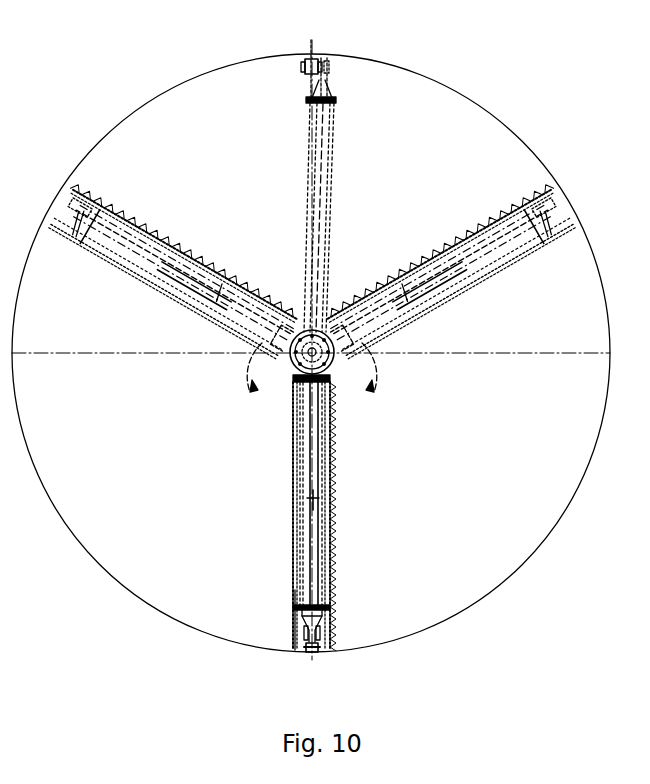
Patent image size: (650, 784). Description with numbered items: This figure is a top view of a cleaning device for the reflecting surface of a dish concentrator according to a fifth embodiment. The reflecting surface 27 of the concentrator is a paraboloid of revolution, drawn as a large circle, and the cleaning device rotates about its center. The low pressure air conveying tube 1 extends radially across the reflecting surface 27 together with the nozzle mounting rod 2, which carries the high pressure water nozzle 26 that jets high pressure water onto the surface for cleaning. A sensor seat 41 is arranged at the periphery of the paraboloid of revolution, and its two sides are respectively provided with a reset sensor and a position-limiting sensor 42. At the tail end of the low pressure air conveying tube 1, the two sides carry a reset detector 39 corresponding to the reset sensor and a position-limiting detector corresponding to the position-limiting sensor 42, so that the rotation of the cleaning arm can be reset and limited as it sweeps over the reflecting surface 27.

The low pressure air conveying tube 1 is at (335, 462).
The nozzle mounting rod 2 is at (335, 510).
The high pressure water nozzle 26 is at (296, 592).
The reflecting surface of a concentrator 27 is at (455, 600).
The reset detector 39 is at (306, 635).
The sensor seat 41 is at (311, 60).
The position-limiting sensor 42 is at (302, 66).